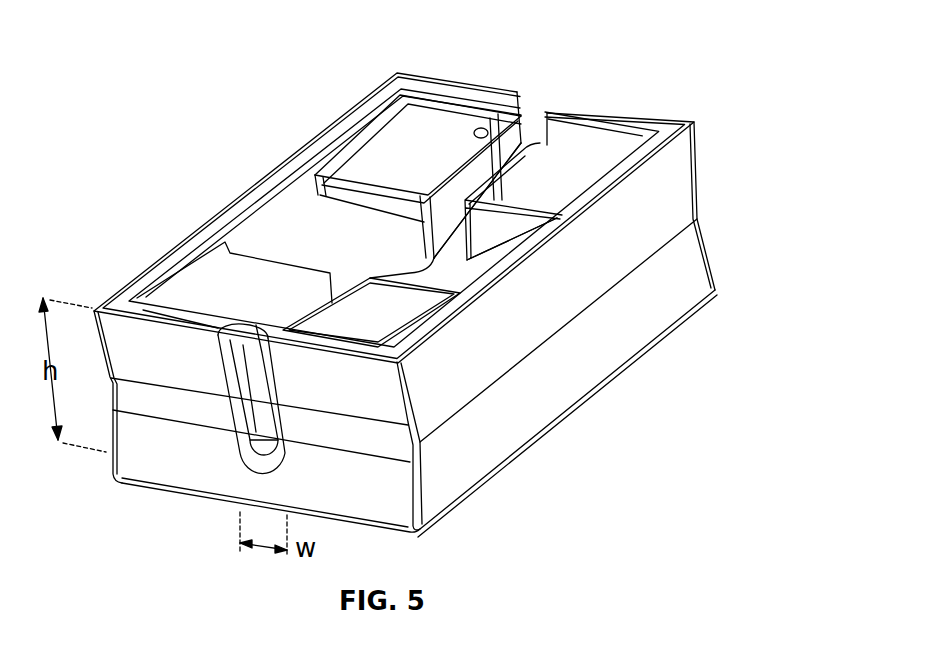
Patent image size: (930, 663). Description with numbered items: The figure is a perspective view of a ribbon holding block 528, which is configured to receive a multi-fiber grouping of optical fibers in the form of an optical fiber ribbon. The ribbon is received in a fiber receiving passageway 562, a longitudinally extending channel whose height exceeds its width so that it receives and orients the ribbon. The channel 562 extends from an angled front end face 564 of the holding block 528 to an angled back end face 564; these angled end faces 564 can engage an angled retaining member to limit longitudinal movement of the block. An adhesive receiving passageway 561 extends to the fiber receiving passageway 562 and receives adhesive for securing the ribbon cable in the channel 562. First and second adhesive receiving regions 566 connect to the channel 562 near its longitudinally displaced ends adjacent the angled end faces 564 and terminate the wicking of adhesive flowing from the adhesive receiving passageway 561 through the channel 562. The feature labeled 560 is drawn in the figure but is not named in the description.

The ribbon holding block 528 is at (318, 65).
The slot in rear wall 560 is at (535, 108).
The adhesive receiving passageway 561 is at (440, 268).
The fiber receiving passageway 562 is at (267, 415).
The angled end face 564 is at (697, 219).
The adhesive receiving region 566 is at (492, 118).